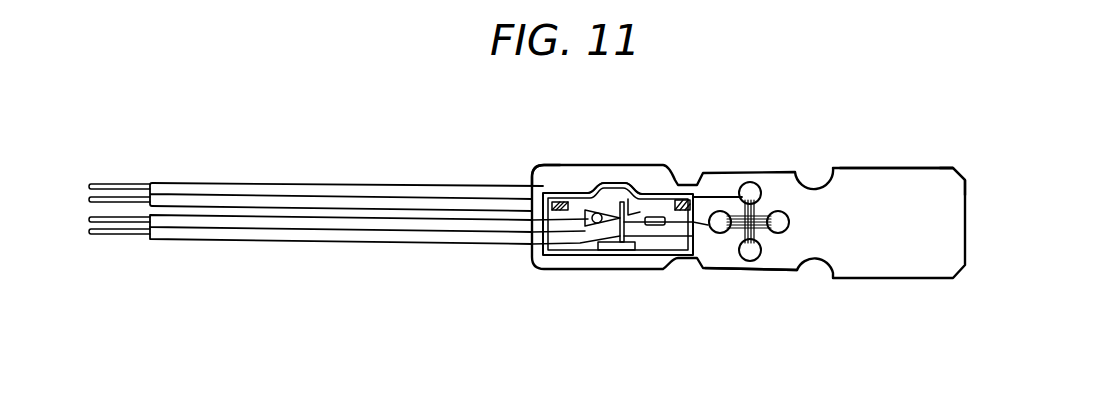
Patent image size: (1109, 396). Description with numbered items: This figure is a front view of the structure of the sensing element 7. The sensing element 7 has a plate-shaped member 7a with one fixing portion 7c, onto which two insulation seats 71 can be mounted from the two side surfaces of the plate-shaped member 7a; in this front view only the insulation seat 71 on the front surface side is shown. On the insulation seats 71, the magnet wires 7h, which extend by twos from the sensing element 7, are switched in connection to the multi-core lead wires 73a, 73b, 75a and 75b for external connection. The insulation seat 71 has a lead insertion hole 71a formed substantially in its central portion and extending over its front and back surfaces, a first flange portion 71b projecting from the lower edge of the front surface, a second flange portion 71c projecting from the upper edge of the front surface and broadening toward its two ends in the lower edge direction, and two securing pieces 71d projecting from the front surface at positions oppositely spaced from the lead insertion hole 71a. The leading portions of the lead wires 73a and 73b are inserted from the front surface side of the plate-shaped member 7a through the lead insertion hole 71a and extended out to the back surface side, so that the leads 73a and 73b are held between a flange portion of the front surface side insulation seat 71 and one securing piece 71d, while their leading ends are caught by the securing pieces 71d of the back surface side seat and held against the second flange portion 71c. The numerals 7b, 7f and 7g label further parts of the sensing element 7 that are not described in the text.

The sensing element 7 is at (904, 292).
The plate-shaped member 7a is at (903, 167).
The housing bottom wall 7b is at (778, 268).
The fixing portion 7c is at (527, 168).
The through holes 7f is at (755, 192).
The cross-shaped ribs 7g is at (788, 185).
The magnet wire 7h is at (716, 180).
The insulation seat 71 is at (675, 247).
The lead insertion hole 71a is at (610, 185).
The first flange portion 71b is at (610, 250).
The second flange portion 71c is at (630, 195).
The securing piece 71d is at (585, 228).
The lead wire 73a is at (677, 198).
The lead wire 73b is at (568, 185).
The lead wire 75a is at (308, 222).
The lead wire 75b is at (437, 241).